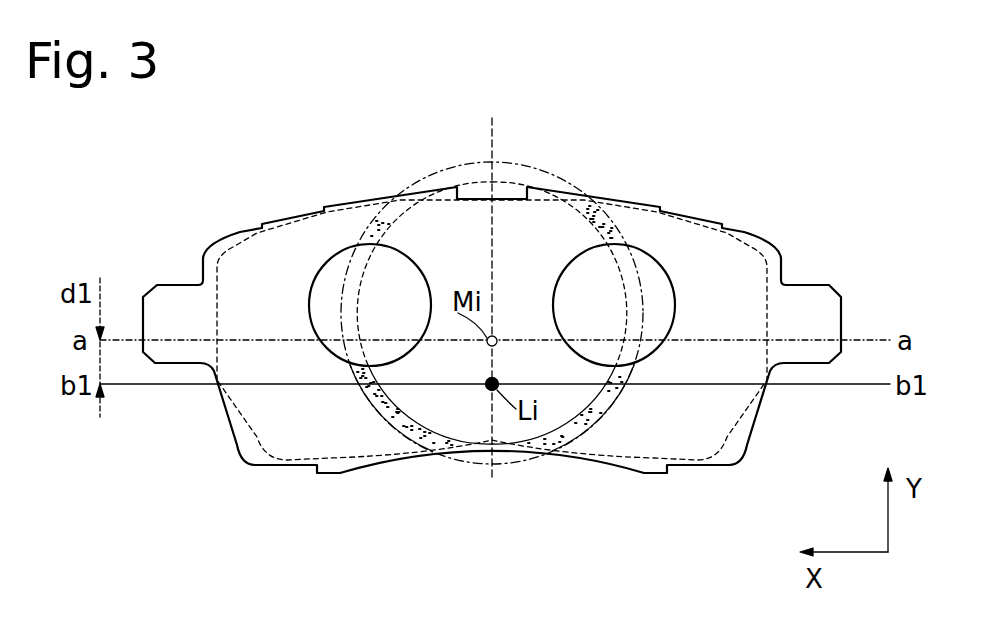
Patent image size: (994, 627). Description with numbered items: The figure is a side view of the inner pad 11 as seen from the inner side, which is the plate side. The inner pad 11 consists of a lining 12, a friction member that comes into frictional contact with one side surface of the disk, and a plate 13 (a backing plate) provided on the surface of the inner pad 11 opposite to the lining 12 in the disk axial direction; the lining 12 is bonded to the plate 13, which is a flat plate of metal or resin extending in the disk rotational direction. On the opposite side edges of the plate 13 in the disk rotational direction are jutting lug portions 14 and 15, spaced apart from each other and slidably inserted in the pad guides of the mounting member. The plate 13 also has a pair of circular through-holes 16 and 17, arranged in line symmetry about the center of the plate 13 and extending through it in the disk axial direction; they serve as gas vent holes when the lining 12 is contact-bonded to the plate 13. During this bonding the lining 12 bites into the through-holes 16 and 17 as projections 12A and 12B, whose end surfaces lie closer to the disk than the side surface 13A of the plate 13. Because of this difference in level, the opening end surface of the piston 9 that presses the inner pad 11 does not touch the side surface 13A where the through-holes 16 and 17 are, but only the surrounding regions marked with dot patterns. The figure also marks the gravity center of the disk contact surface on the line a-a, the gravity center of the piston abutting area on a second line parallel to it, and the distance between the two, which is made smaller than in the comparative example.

The piston 9 is at (532, 462).
The inner pad 11 is at (774, 203).
The lining 12 is at (257, 233).
The projection 12A is at (372, 320).
The projection 12B is at (593, 287).
The plate 13 is at (277, 432).
The side surface 13A is at (687, 440).
The lug portion 14 is at (817, 298).
The lug portion 15 is at (168, 302).
The through-hole 16 is at (660, 267).
The through-hole 17 is at (333, 276).